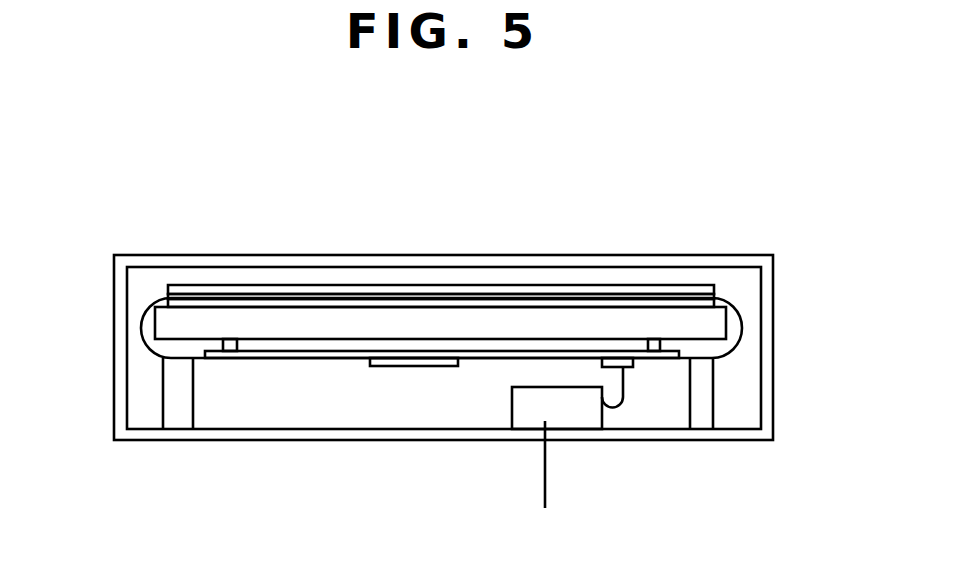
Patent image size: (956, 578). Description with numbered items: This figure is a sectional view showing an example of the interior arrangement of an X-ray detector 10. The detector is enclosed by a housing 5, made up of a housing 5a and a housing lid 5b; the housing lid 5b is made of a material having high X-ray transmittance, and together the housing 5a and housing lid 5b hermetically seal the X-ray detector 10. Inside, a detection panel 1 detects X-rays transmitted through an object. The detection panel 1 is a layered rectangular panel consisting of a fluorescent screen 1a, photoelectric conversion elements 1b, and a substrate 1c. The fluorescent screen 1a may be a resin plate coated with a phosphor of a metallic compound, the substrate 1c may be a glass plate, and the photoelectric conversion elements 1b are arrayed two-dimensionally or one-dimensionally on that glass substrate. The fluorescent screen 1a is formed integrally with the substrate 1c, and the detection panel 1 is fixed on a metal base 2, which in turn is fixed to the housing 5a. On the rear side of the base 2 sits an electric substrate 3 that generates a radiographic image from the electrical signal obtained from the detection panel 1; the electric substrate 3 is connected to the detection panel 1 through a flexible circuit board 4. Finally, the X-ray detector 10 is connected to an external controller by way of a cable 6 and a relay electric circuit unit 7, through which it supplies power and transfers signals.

The X-ray detector 10 is at (429, 326).
The housing 5 is at (403, 292).
The housing 5a is at (121, 300).
The housing lid 5b is at (434, 311).
The detection panel 1 is at (441, 226).
The fluorescent screen 1a is at (273, 288).
The photoelectric conversion elements 1b is at (341, 296).
The substrate 1c is at (250, 191).
The base 2 is at (705, 326).
The electric substrate 3 is at (525, 353).
The flexible circuit board 4 is at (140, 338).
The cable 6 is at (547, 478).
The relay electric circuit unit 7 is at (586, 413).